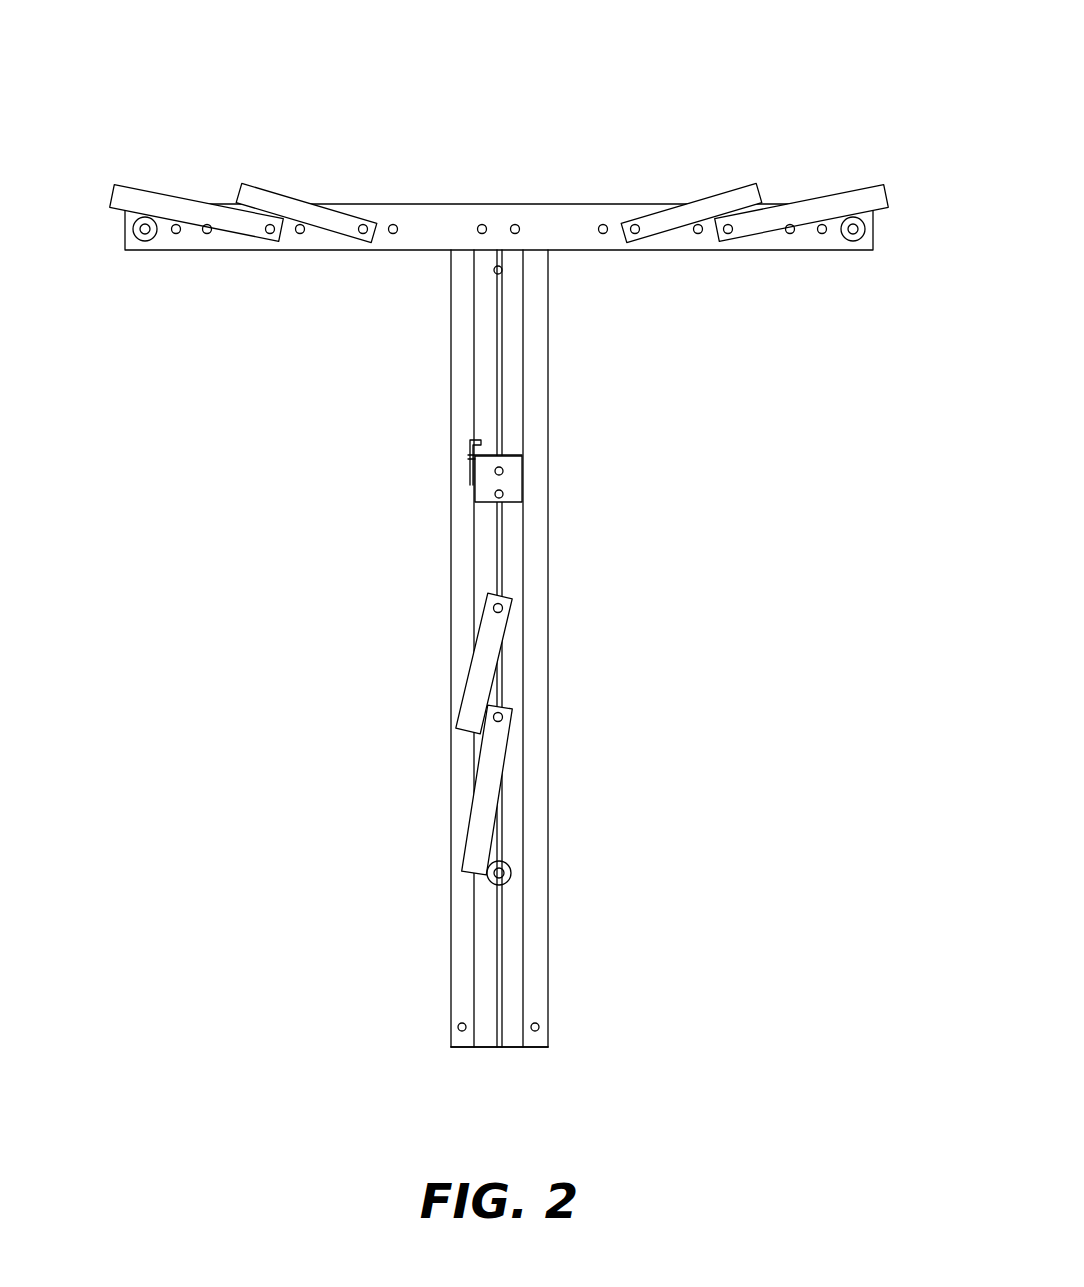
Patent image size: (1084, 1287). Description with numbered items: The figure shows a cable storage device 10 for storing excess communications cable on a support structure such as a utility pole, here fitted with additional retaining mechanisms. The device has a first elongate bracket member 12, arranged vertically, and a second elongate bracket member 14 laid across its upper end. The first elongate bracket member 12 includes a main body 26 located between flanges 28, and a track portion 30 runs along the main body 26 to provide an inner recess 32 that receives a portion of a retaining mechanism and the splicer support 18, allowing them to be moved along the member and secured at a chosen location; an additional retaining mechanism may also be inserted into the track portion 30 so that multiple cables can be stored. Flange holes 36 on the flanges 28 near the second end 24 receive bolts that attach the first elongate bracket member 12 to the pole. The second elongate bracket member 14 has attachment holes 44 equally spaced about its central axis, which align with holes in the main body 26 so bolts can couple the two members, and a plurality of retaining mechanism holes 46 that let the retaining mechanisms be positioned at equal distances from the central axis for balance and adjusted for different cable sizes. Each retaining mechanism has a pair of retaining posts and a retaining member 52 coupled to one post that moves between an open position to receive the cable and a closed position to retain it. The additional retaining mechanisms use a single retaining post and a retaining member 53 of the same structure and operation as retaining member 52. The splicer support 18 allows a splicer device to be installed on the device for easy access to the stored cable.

The cable storage device 10 is at (124, 46).
The first elongate bracket member 12 is at (548, 397).
The second elongate bracket member 14 is at (572, 240).
The splicer support 18 is at (515, 480).
The second end 24 is at (462, 1048).
The main body 26 is at (515, 957).
The flanges 28 is at (457, 938).
The track portion 30 is at (502, 1006).
The inner recess 32 is at (497, 979).
The flange holes 36 is at (458, 1027).
The attachment holes 44 is at (482, 222).
The retaining mechanism holes 46 is at (393, 236).
The retaining member 52 is at (192, 205).
The retaining member 53 is at (327, 218).